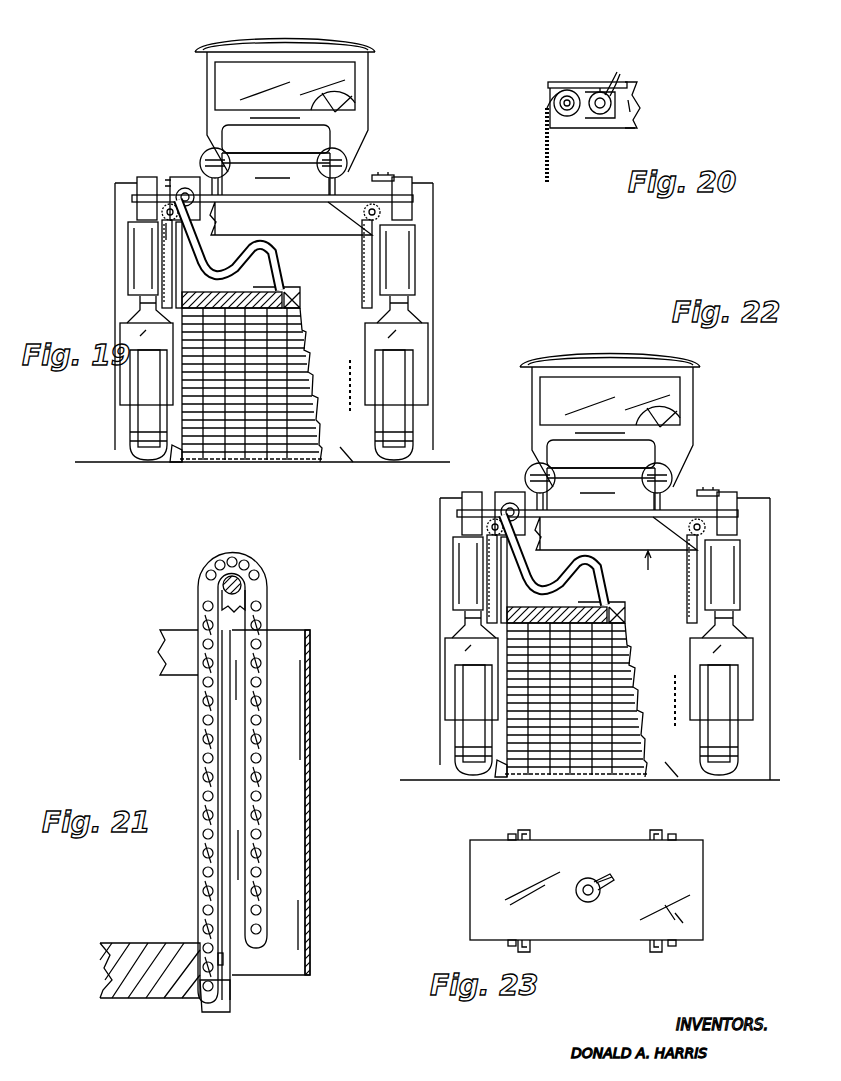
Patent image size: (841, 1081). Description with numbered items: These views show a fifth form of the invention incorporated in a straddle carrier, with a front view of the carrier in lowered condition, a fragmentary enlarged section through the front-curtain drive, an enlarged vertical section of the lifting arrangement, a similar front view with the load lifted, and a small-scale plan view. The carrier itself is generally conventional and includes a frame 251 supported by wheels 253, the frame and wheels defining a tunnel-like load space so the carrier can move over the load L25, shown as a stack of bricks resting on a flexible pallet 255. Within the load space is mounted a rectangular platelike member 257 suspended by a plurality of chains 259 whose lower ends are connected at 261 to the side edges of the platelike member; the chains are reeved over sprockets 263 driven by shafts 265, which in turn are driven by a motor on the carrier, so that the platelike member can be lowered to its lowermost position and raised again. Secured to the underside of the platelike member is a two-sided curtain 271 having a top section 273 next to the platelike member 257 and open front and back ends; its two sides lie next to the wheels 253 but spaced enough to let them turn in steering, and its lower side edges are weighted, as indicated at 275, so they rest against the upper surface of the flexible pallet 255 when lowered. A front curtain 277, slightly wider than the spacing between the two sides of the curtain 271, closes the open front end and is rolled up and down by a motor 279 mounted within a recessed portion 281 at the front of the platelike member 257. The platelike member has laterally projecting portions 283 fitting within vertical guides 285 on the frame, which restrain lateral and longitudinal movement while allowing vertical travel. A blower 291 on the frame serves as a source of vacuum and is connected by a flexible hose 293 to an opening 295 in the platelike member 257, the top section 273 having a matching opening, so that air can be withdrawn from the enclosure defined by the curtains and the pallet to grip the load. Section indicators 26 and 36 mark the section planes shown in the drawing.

In FIG. 19, the frame 251 is at (332, 208).
In FIG. 21, the frame 251 is at (180, 630).
In FIG. 22, the frame 251 is at (597, 500).
In FIG. 19, the wheels 253 is at (395, 388).
In FIG. 22, the wheels 253 is at (598, 706).
In FIG. 19, the flexible pallet 255 is at (238, 463).
In FIG. 22, the flexible pallet 255 is at (576, 700).
In FIG. 19, the platelike member 257 is at (286, 291).
In FIG. 20, the platelike member 257 is at (625, 88).
In FIG. 21, the platelike member 257 is at (148, 960).
In FIG. 22, the platelike member 257 is at (500, 619).
In FIG. 23, the platelike member 257 is at (578, 855).
In FIG. 19, the chains 259 is at (165, 262).
In FIG. 21, the chains 259 is at (200, 718).
In FIG. 22, the chains 259 is at (592, 570).
In FIG. 19, the chain connection 261 is at (178, 300).
In FIG. 21, the chain connection 261 is at (224, 960).
In FIG. 22, the chain connection 261 is at (592, 592).
In FIG. 19, the sprockets 263 is at (162, 213).
In FIG. 21, the sprockets 263 is at (238, 600).
In FIG. 22, the sprockets 263 is at (584, 499).
In FIG. 19, the shafts 265 is at (398, 199).
In FIG. 21, the shafts 265 is at (240, 585).
In FIG. 22, the shafts 265 is at (708, 491).
In FIG. 19, the two-sided curtain 271 is at (176, 458).
In FIG. 22, the two-sided curtain 271 is at (446, 710).
In FIG. 19, the top section 273 is at (302, 322).
In FIG. 22, the top section 273 is at (649, 691).
In FIG. 19, the weighted lower side edges 275 is at (178, 464).
In FIG. 22, the weighted lower side edges 275 is at (576, 762).
In FIG. 19, the front curtain 277 is at (344, 450).
In FIG. 20, the front curtain 277 is at (545, 150).
In FIG. 22, the front curtain 277 is at (678, 741).
In FIG. 20, the motor 279 is at (604, 90).
In FIG. 20, the recessed portion 281 is at (556, 93).
In FIG. 23, the laterally projecting portions 283 is at (520, 836).
In FIG. 23, the vertical guides 285 is at (530, 830).
In FIG. 19, the blower 291 is at (181, 176).
In FIG. 22, the blower 291 is at (508, 486).
In FIG. 19, the flexible conduit or hose 293 is at (258, 250).
In FIG. 22, the flexible conduit or hose 293 is at (555, 560).
In FIG. 23, the flexible conduit or hose 293 is at (608, 890).
In FIG. 19, the opening 295 is at (301, 305).
In FIG. 22, the opening 295 is at (625, 605).
In FIG. 19, the load L25 is at (278, 450).
In FIG. 22, the load L25 is at (655, 654).
In FIG. 19, the section arrow 26 is at (352, 275).
In FIG. 19, the section arrow 36 is at (356, 328).